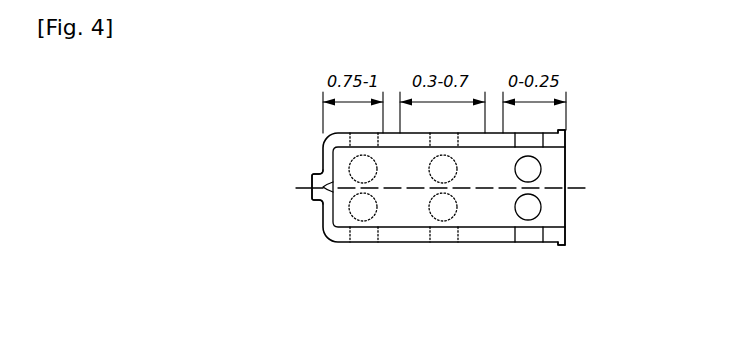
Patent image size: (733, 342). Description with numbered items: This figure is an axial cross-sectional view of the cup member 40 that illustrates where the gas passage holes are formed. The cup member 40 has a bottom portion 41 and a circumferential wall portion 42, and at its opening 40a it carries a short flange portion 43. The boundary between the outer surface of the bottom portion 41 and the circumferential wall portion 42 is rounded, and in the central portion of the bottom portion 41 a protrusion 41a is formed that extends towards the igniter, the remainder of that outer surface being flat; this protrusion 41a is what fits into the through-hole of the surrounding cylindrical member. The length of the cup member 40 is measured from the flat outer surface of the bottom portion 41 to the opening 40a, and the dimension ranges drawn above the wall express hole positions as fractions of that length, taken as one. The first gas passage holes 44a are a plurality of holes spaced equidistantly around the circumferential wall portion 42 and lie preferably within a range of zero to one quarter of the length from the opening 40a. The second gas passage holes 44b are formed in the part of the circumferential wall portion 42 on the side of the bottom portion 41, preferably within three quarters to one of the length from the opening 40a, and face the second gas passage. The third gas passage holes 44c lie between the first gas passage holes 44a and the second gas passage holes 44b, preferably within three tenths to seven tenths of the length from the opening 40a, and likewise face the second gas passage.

The cup member 40 is at (419, 247).
The opening 40a is at (565, 215).
The bottom portion 41 is at (322, 221).
The protrusion 41a is at (312, 174).
The circumferential wall portion 42 is at (485, 242).
The short flange portion 43 is at (557, 243).
The first gas passage holes 44a is at (532, 168).
The second gas passage holes 44b is at (362, 233).
The third gas passage holes 44c is at (443, 233).